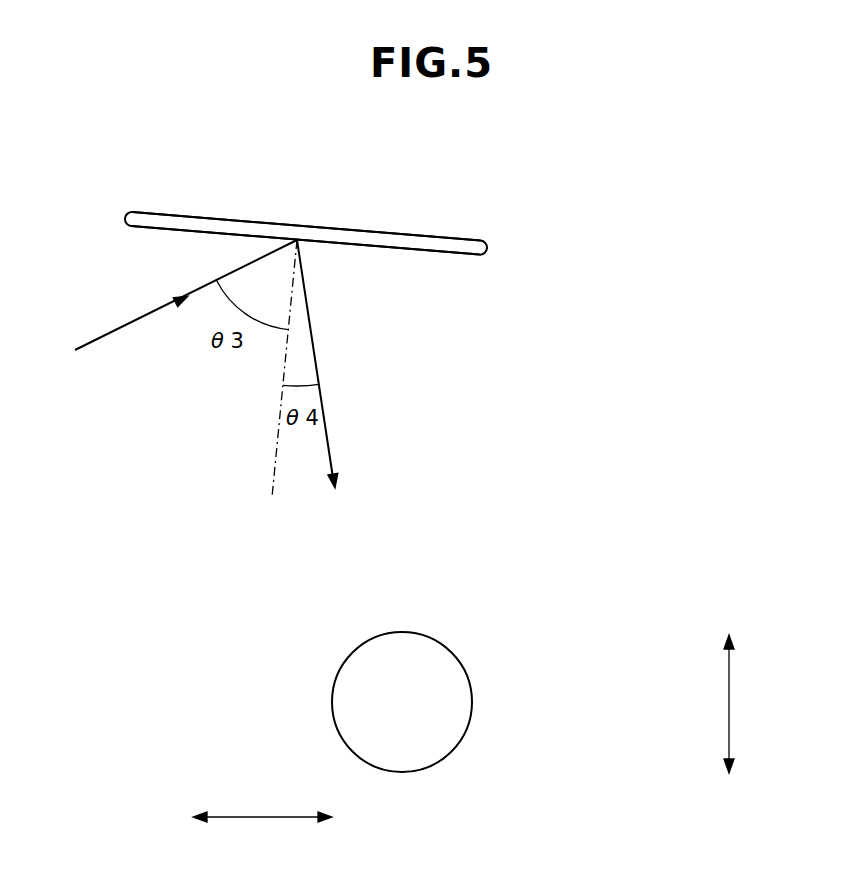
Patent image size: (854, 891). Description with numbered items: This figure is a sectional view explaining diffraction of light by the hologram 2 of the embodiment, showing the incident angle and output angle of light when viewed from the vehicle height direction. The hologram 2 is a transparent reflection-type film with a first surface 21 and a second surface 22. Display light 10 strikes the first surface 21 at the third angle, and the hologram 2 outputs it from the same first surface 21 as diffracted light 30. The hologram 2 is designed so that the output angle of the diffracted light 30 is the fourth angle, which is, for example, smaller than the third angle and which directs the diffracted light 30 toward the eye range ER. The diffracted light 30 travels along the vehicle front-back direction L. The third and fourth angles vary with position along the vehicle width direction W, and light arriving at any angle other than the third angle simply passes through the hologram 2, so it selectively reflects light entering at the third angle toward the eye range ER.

The hologram 2 is at (398, 235).
The second surface 22 is at (338, 229).
The first surface 21 is at (415, 252).
The display light 10 is at (119, 328).
The diffracted light 30 is at (328, 430).
The eye range ER is at (400, 631).
The vehicle width direction W is at (262, 803).
The vehicle front-back direction L is at (741, 704).